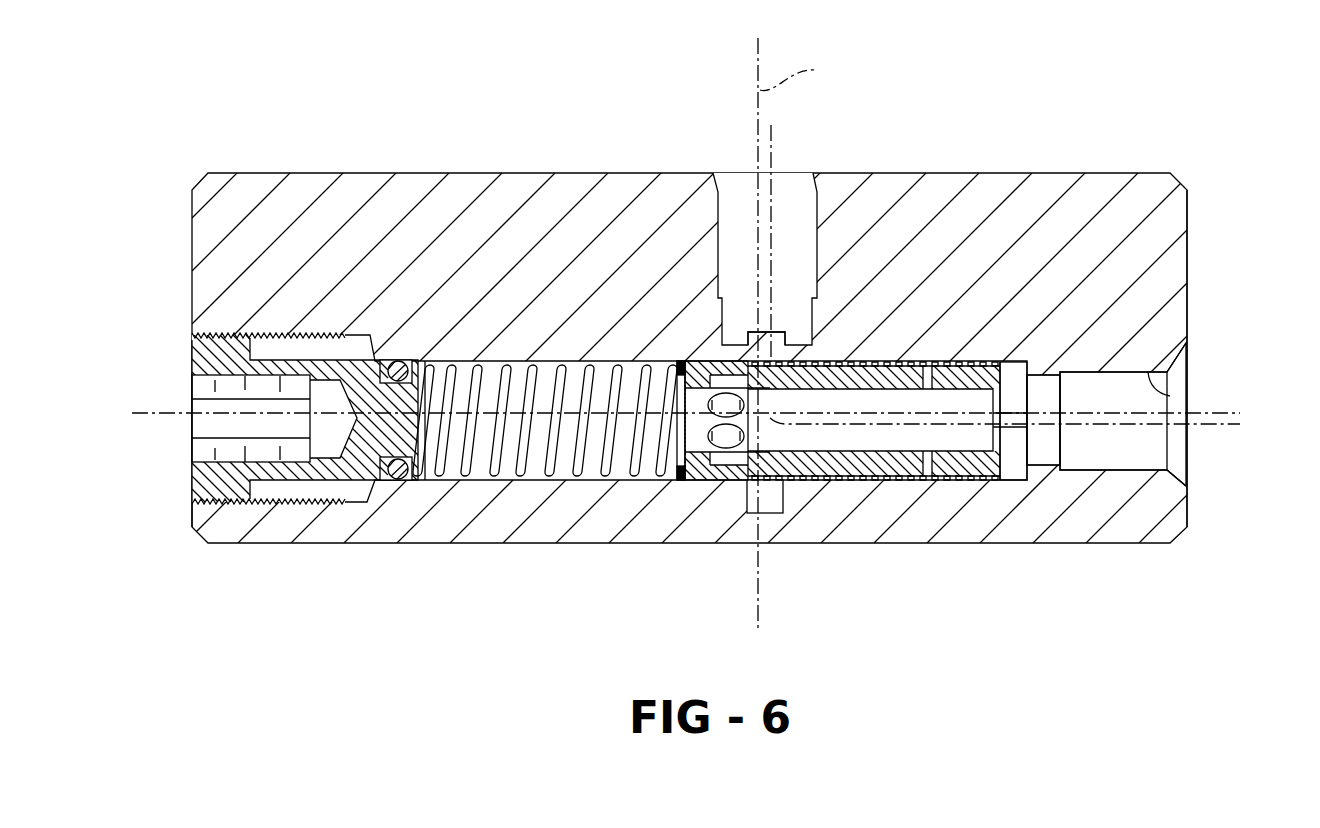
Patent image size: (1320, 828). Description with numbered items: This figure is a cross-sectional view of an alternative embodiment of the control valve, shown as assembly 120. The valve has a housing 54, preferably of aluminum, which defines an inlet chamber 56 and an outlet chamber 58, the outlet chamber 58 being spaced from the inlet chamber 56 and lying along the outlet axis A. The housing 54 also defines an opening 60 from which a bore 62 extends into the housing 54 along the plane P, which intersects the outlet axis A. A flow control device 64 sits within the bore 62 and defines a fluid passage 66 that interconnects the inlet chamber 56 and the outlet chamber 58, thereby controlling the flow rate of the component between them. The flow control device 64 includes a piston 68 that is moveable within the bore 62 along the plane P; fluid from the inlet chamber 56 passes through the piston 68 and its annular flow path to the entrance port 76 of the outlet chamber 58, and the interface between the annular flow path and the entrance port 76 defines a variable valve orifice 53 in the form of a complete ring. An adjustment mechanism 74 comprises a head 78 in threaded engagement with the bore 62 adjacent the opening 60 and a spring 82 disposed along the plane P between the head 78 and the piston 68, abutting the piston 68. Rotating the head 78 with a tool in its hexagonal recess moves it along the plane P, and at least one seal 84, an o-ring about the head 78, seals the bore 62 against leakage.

The valve assembly 120 is at (992, 86).
The housing 54 is at (1104, 173).
The outlet chamber 58 is at (810, 210).
The entrance port 76 is at (776, 336).
The piston 68 is at (837, 480).
The opening 60 is at (208, 333).
The head 78 is at (192, 473).
The adjustment mechanism 74 is at (218, 510).
The seal 84 is at (397, 480).
The spring 82 is at (482, 450).
The bore 62 is at (545, 478).
The variable valve orifice 53 is at (723, 383).
The flow control device 64 is at (888, 354).
The inlet chamber 56 is at (1193, 392).
The fluid passage 66 is at (1217, 427).